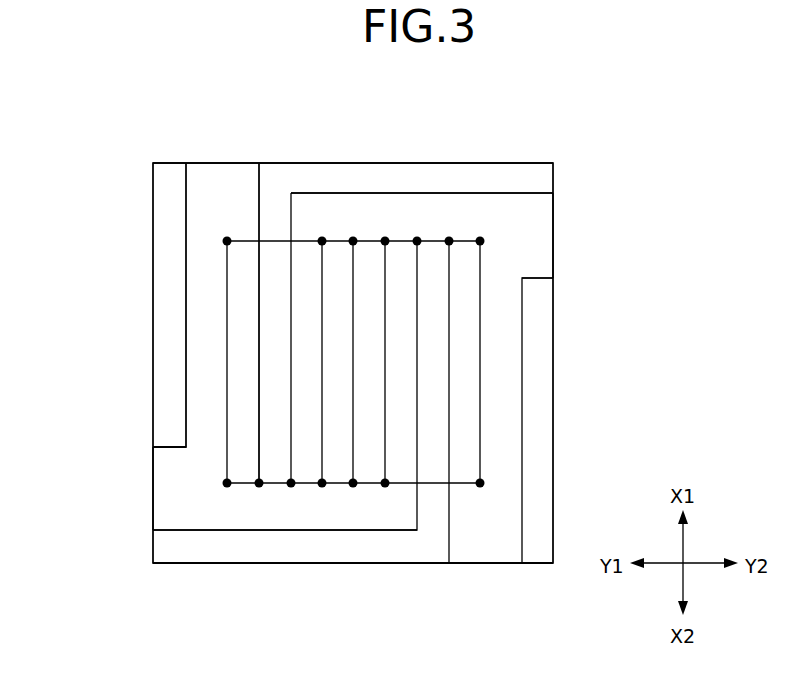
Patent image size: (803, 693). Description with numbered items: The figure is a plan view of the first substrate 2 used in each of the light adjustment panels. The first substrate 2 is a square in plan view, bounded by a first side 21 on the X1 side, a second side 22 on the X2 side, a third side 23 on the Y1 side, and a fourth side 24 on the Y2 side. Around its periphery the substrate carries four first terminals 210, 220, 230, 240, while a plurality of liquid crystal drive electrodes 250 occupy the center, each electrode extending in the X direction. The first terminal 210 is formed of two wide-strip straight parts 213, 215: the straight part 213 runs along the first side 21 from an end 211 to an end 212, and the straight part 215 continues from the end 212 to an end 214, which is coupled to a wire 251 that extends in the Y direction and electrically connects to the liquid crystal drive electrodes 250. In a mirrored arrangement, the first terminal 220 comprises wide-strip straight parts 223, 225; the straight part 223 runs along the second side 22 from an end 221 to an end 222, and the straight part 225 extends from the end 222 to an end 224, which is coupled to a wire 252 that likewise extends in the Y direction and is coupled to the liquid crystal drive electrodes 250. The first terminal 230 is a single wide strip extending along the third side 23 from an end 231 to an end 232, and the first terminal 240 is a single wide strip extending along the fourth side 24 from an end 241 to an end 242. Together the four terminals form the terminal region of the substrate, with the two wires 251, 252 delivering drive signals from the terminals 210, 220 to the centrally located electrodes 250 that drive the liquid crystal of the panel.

The first substrate 2 is at (630, 87).
The first side 21 is at (203, 163).
The first terminal 210 is at (500, 158).
The end 211 is at (555, 178).
The end 212 is at (273, 178).
The straight part 213 is at (370, 180).
The end 214 is at (275, 243).
The straight part 215 is at (275, 218).
The second side 22 is at (503, 563).
The first terminal 220 is at (329, 570).
The end 221 is at (153, 548).
The end 222 is at (433, 547).
The straight part 223 is at (197, 545).
The end 224 is at (435, 482).
The straight part 225 is at (433, 507).
The third side 23 is at (153, 500).
The first terminal 230 is at (170, 265).
The end 231 is at (165, 163).
The end 232 is at (170, 447).
The fourth side 24 is at (555, 222).
The first terminal 240 is at (537, 372).
The end 241 is at (540, 563).
The end 242 is at (538, 278).
The liquid crystal drive electrodes 250 is at (227, 423).
The wire 251 is at (432, 240).
The wire 252 is at (400, 467).